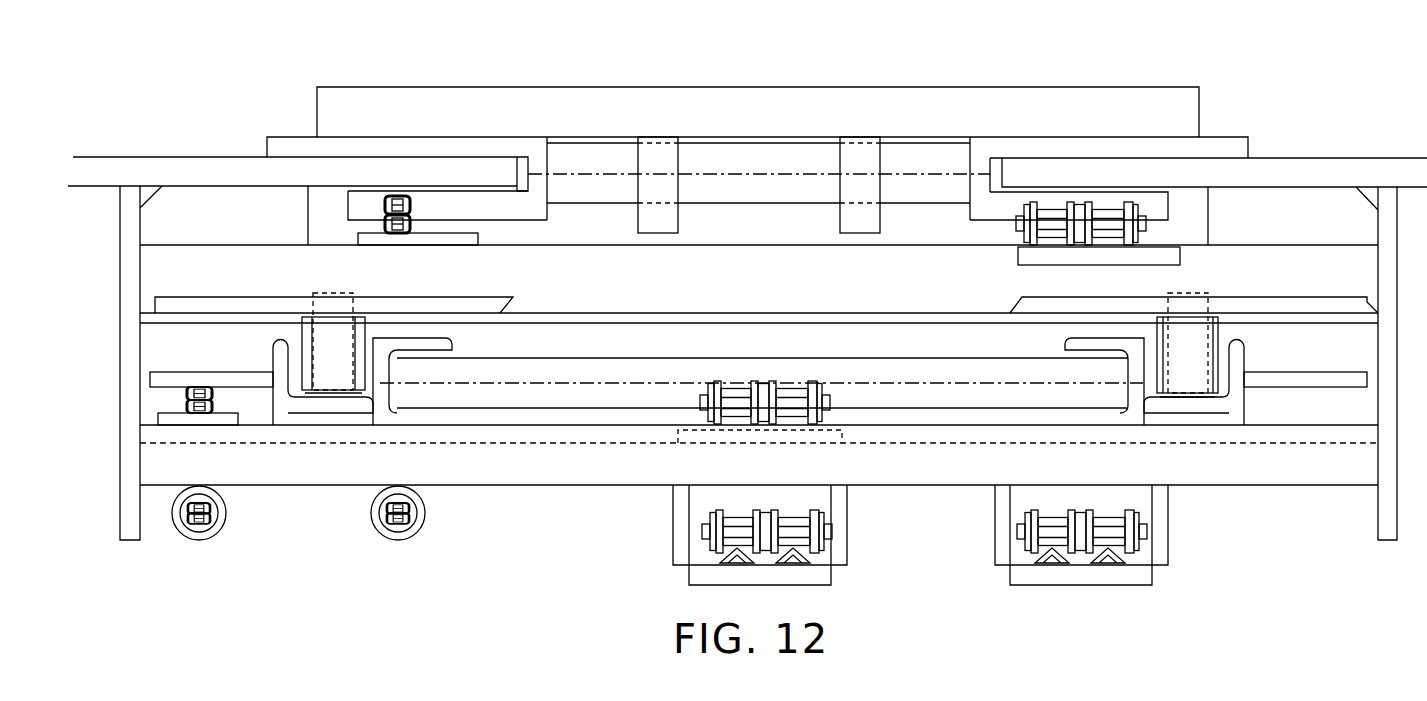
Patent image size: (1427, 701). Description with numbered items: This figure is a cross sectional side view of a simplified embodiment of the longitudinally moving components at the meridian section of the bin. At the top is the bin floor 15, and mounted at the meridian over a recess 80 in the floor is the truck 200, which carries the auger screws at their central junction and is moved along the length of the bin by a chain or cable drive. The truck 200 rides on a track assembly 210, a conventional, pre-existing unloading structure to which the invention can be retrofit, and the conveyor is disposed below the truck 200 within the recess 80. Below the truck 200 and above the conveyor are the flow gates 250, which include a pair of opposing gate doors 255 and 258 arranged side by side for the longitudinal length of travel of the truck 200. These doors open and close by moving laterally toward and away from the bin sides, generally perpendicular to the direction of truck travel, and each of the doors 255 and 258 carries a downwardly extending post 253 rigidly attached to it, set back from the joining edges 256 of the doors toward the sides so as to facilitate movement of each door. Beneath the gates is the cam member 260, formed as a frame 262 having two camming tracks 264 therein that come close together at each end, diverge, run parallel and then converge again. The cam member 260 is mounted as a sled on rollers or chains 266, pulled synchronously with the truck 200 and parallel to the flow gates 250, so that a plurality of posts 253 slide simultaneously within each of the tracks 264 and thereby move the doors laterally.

The floor 15 is at (95, 157).
The recess 80 is at (558, 549).
The truck 200 is at (1159, 69).
The track assembly 210 is at (1139, 206).
The flow gates 250 is at (526, 298).
The post 253 is at (342, 330).
The gate door 255 is at (1245, 304).
The joining edges 256 is at (500, 312).
The gate door 258 is at (427, 302).
The cam member 260 is at (292, 402).
The frame 262 is at (392, 370).
The camming tracks 264 is at (297, 358).
The rollers or chains 266 is at (187, 398).